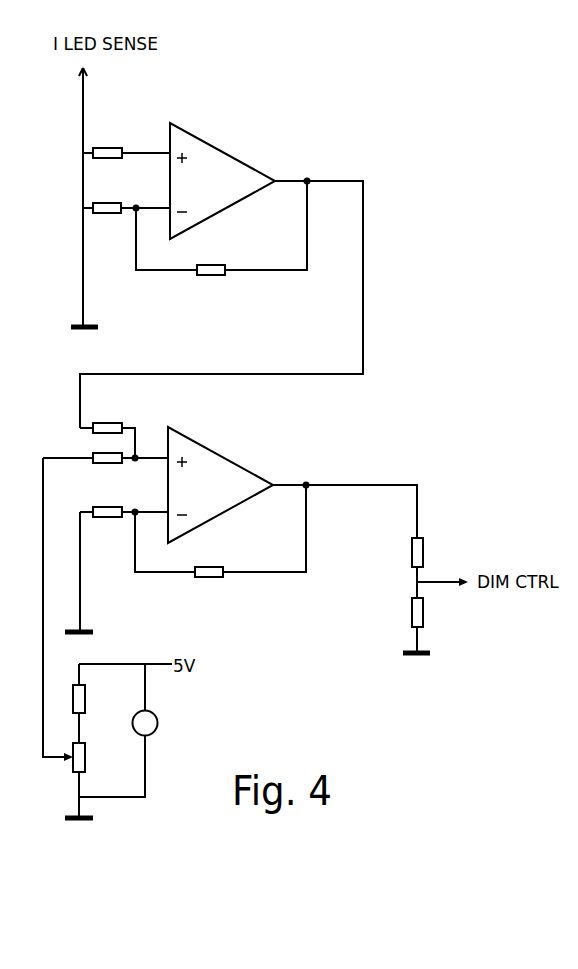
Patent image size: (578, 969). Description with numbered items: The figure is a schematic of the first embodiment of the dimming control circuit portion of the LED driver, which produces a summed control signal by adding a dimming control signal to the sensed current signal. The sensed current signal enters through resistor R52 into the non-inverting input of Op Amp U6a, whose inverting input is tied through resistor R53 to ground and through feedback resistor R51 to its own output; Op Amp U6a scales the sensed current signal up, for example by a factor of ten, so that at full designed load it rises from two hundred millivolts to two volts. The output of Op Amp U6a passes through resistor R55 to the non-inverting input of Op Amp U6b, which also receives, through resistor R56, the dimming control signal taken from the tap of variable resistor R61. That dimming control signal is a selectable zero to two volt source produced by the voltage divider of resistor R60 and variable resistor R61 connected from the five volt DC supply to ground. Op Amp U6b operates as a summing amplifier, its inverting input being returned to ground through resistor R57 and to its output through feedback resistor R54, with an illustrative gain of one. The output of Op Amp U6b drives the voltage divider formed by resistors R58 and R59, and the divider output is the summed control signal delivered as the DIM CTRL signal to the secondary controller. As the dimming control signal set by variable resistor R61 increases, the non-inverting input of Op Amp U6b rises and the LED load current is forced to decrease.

The feedback resistor of first op-amp stage R51 is at (221, 241).
The input resistor from LED current sense R52 is at (126, 164).
The resistor to ground at inverting input of U6a R53 is at (126, 222).
The feedback resistor of second op-amp stage R54 is at (220, 543).
The resistor coupling U6a output to U6b non-inverting input R55 is at (107, 430).
The resistor from R61 tap to U6b non-inverting input R56 is at (105, 470).
The resistor to ground at inverting input of U6b R57 is at (124, 569).
The resistor R58 is at (436, 568).
The resistor R59 is at (436, 625).
The resistor R60 is at (97, 714).
The variable resistor R61 is at (97, 757).
The Op Amp U6a is at (247, 175).
The Op Amp U6b is at (245, 482).